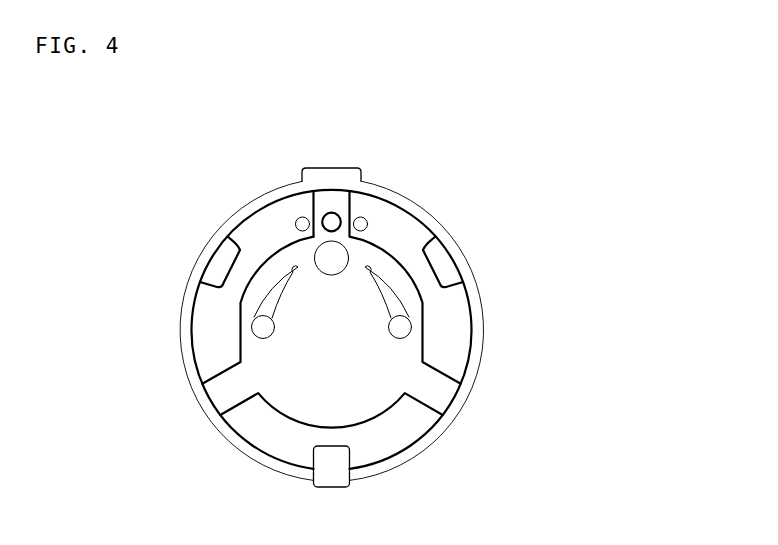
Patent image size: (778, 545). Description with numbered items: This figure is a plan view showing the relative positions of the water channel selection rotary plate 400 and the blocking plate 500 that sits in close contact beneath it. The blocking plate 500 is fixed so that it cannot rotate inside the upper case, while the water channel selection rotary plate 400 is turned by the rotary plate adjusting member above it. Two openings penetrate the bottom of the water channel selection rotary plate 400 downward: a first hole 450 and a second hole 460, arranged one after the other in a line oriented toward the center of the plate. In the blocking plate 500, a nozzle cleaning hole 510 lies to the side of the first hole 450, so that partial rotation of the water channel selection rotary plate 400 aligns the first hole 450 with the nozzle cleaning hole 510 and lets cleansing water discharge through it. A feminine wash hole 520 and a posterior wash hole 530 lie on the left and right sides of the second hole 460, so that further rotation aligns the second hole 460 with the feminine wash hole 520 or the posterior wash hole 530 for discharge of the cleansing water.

The water channel selection rotary plate 400 is at (253, 435).
The first hole 450 is at (333, 212).
The second hole 460 is at (336, 257).
The blocking plate 500 is at (210, 255).
The nozzle cleaning hole 510 is at (297, 220).
The feminine wash hole 520 is at (252, 327).
The posterior wash hole 530 is at (410, 327).